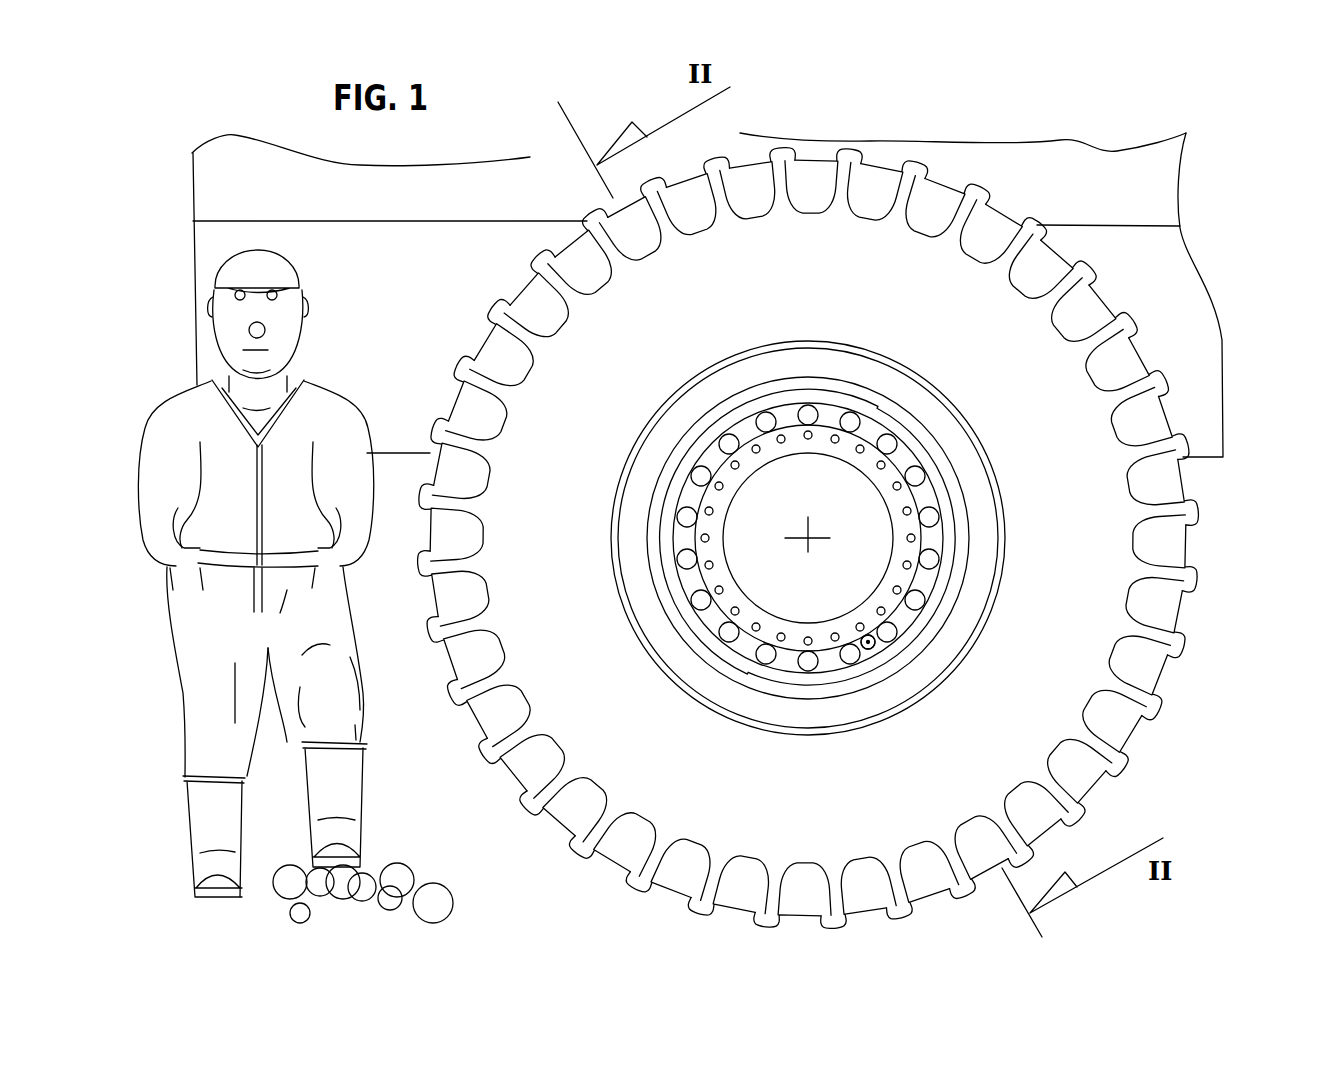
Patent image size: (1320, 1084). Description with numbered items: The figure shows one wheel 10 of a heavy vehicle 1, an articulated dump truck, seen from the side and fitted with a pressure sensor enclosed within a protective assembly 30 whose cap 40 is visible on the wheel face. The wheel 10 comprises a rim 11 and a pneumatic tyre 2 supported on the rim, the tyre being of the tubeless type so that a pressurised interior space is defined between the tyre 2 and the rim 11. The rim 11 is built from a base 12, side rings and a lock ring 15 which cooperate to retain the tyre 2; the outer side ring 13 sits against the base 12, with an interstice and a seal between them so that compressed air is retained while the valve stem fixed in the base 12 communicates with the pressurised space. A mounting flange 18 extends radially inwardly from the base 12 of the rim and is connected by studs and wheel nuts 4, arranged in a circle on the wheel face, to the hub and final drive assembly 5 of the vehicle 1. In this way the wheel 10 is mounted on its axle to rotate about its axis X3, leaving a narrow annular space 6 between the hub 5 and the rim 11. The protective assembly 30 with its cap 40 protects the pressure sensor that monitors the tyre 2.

The heavy vehicle 1 is at (1202, 210).
The pneumatic tyre 2 is at (1150, 680).
The wheel nuts 4 is at (730, 628).
The hub and final drive assembly 5 is at (917, 533).
The annular space 6 is at (928, 493).
The wheel 10 is at (837, 538).
The rim 11 is at (828, 530).
The base 12 is at (910, 440).
The outer side ring 13 is at (980, 583).
The lock ring 15 is at (983, 632).
The mounting flange 18 is at (915, 597).
The protective assembly 30 is at (869, 650).
The cap 40 is at (868, 642).
The axis X3 is at (813, 528).